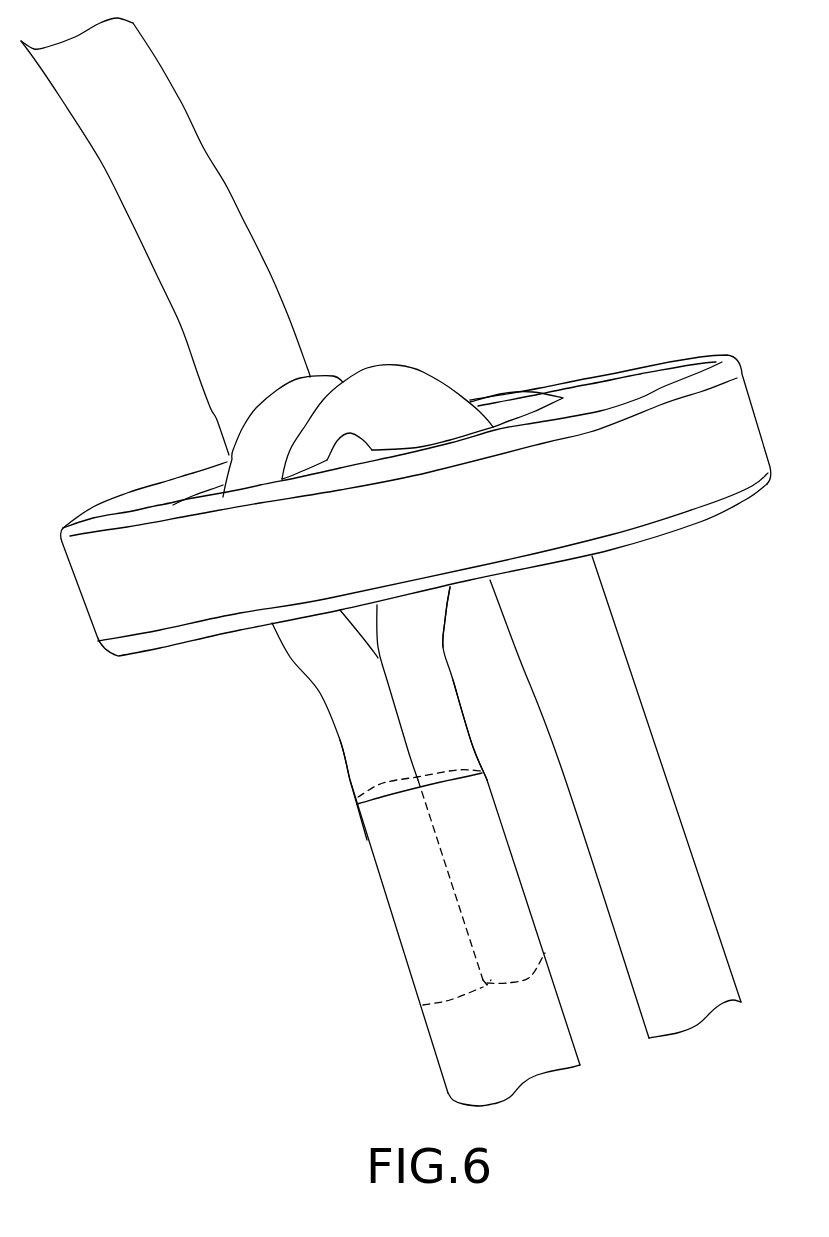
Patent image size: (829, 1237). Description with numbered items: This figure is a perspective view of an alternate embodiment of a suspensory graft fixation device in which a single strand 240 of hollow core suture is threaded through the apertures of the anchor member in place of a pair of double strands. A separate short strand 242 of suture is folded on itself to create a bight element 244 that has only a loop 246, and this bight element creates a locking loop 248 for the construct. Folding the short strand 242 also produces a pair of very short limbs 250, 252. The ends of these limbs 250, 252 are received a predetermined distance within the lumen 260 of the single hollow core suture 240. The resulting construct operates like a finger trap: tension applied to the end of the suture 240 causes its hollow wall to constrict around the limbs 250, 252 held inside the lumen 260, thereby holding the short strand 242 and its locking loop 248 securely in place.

The single strand of hollow core suture 240 is at (637, 723).
The short strand of suture 242 is at (350, 727).
The bight element 244 is at (283, 660).
The loop 246 is at (433, 612).
The locking loop 248 is at (250, 440).
The limb 250 is at (360, 767).
The limb 252 is at (450, 727).
The lumen 260 is at (413, 910).